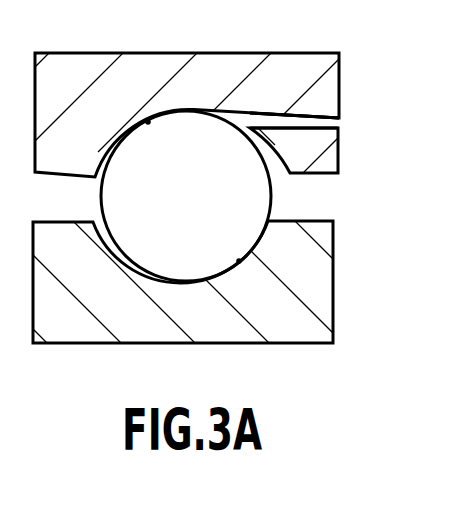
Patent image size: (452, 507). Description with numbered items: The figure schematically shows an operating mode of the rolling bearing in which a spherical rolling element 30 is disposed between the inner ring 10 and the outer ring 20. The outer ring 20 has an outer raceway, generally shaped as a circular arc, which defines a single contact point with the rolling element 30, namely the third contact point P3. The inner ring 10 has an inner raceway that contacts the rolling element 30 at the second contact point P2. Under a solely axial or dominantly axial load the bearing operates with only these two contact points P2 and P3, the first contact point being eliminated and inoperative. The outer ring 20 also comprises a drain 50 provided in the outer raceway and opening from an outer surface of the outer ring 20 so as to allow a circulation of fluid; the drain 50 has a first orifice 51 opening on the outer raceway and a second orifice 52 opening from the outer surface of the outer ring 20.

The inner ring 10 is at (226, 361).
The outer ring 20 is at (226, 88).
The rolling element 30 is at (209, 196).
The drain 50 is at (313, 150).
The first orifice 51 is at (294, 97).
The second orifice 52 is at (315, 124).
The second contact point P2 is at (252, 286).
The third contact point P3 is at (133, 103).